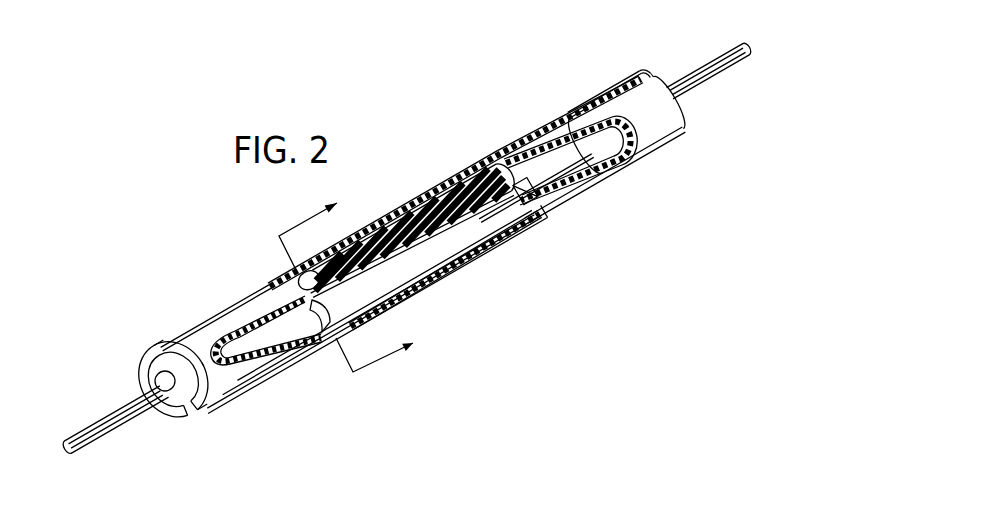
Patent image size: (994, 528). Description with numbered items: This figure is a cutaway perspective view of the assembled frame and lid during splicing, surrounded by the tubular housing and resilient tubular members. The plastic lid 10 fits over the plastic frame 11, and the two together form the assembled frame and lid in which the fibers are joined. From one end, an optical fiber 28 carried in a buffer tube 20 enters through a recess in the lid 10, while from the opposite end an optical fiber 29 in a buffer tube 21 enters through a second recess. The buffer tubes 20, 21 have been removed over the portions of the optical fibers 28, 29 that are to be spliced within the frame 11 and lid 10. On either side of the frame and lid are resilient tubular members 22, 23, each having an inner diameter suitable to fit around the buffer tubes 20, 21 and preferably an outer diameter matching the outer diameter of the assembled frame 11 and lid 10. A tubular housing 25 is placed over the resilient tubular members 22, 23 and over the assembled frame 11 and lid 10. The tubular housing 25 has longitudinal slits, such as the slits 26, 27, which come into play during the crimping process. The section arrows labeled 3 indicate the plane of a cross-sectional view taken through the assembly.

The coil spring 10 is at (296, 272).
The retaining tab 11 is at (328, 332).
The first cable 20 is at (91, 428).
The second cable 21 is at (712, 68).
The end ring 22 is at (164, 372).
The braided sheath 23 is at (549, 126).
The sleeve 25 is at (666, 125).
The slot in end ring 26 is at (165, 418).
The notch 27 is at (657, 79).
The loop 28 is at (320, 322).
The connector block 29 is at (522, 207).
The section line 3- 3 is at (356, 280).